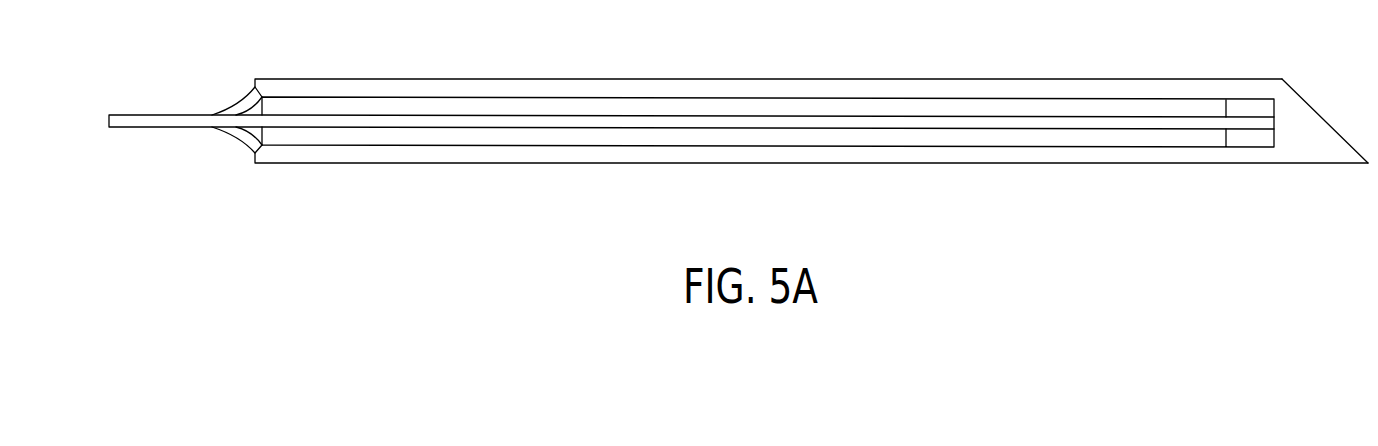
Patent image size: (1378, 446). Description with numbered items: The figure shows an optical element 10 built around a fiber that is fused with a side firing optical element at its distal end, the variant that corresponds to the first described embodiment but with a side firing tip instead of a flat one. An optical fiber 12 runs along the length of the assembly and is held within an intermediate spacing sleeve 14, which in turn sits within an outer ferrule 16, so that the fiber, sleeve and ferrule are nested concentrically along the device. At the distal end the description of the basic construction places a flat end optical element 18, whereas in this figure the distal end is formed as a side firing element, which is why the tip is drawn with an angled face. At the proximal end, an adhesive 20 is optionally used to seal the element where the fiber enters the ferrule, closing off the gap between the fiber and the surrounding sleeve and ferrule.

The optical element 10 is at (487, 199).
The optical fiber 12 is at (871, 122).
The intermediate spacing sleeve 14 is at (636, 98).
The ferrule 16 is at (407, 79).
The flat end optical element 18 is at (1325, 120).
The adhesive 20 is at (233, 105).